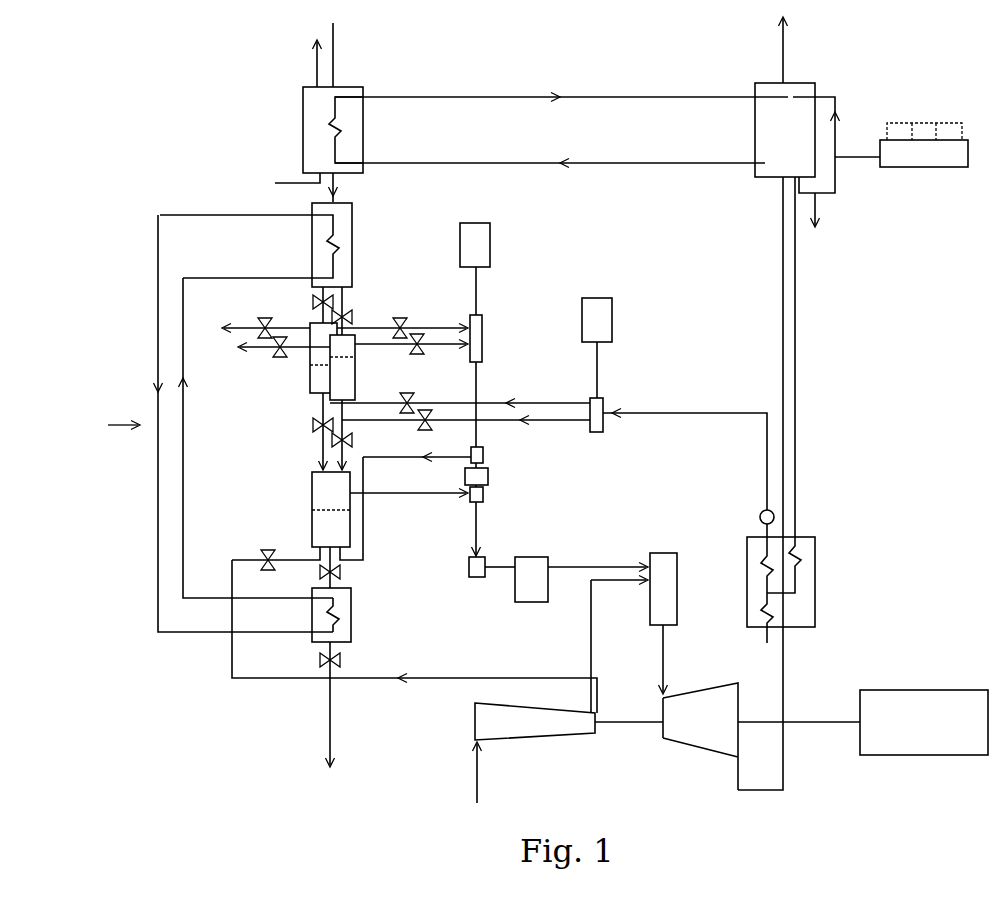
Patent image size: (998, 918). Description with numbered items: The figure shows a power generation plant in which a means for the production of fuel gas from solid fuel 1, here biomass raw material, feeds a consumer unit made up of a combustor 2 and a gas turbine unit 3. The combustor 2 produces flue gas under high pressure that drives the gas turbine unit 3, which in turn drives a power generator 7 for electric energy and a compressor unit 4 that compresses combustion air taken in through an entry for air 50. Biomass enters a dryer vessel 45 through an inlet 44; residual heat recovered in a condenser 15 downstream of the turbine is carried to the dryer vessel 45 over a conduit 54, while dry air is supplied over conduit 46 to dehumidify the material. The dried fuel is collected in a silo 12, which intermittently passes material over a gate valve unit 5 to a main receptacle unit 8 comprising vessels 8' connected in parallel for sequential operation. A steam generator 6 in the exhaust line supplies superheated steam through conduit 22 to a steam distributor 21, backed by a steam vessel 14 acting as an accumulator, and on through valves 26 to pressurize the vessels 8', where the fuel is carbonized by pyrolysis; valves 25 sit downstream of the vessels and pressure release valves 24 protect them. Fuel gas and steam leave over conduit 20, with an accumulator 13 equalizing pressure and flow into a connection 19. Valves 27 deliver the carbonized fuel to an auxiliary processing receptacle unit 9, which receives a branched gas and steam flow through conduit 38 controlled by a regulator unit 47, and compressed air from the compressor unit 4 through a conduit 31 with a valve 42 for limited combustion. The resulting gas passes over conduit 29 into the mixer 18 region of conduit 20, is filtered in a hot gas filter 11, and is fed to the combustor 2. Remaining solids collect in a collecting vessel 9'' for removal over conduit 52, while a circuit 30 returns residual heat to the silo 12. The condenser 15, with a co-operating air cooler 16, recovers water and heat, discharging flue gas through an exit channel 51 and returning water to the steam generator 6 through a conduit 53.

The means for the production of fuel gas from solid fuel 1 is at (114, 425).
The combustor 2 is at (665, 552).
The gas turbine unit 3 is at (693, 753).
The compressor unit 4 is at (527, 741).
The gate valve unit 5 is at (357, 302).
The steam generator 6 is at (816, 567).
The power generator 7 is at (913, 757).
The main receptacle unit 8 is at (372, 367).
The vessels 8' is at (306, 358).
The auxiliary processing receptacle unit 9 is at (315, 530).
The collecting vessel 9'' is at (355, 615).
The hot gas filter 11 is at (535, 554).
The silo 12 is at (353, 248).
The accumulator 13 is at (475, 222).
The steam vessel 14 is at (598, 297).
The condenser 15 is at (765, 178).
The air cooler 16 is at (937, 170).
The mixing device 18 is at (468, 570).
The connection 19 is at (487, 340).
The conduit 20 is at (480, 390).
The steam distributor 21 is at (607, 402).
The conduit 22 is at (680, 408).
The pressure release valves 24 is at (272, 326).
The valves 25 is at (416, 335).
The valves 26 is at (418, 422).
The valves 27 is at (337, 442).
The conduit 29 is at (433, 497).
The circuit 30 is at (198, 637).
The conduit for air feed 31 is at (258, 682).
The conduit 38 is at (366, 527).
The valve 42 is at (265, 551).
The inlet 44 is at (340, 64).
The dryer vessel 45 is at (304, 130).
The conduit 46 is at (312, 70).
The regulator unit 47 is at (490, 469).
The entry for air 50 is at (470, 773).
The flue gas exit channel 51 is at (788, 62).
The conduit 52 is at (323, 715).
The conduit 53 is at (801, 480).
The conduit 54 is at (608, 158).